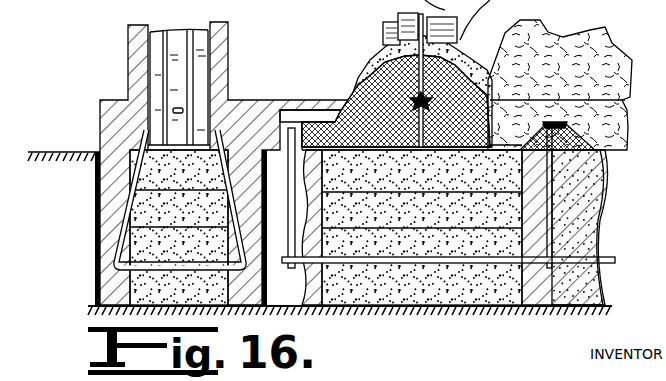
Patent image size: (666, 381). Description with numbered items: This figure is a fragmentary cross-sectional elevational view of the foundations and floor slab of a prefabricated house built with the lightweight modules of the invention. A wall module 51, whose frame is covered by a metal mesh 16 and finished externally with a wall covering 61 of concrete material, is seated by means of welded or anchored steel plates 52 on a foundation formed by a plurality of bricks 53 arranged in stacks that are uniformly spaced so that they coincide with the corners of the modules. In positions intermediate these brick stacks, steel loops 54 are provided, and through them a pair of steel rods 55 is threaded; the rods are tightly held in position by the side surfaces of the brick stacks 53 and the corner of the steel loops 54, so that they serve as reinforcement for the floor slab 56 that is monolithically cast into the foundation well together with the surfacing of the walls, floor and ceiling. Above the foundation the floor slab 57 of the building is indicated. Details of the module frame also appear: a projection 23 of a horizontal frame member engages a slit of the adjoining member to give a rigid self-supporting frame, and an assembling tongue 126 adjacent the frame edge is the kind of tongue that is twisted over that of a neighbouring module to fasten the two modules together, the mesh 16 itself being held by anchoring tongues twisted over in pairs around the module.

The module 51 is at (172, 54).
The steel plate 52 is at (165, 147).
The bricks 53 is at (148, 211).
The steel loop 54 is at (112, 250).
The steel rod 55 is at (100, 279).
The floor slab 56 is at (110, 135).
The floor slab 57 is at (305, 103).
The assembling tongue 126 is at (300, 0).
The projection 23 is at (355, 0).
The metal mesh 16 is at (490, 63).
The wall covering 61 is at (543, 53).